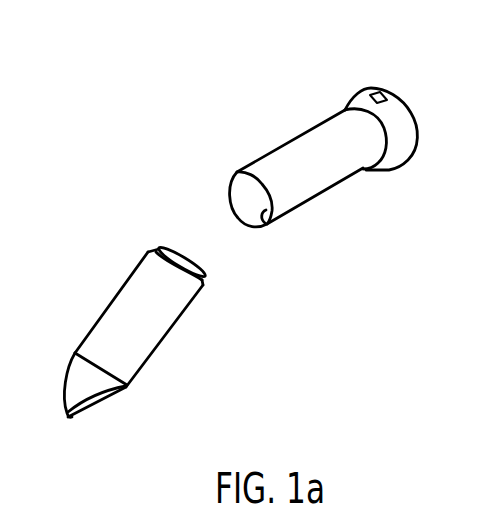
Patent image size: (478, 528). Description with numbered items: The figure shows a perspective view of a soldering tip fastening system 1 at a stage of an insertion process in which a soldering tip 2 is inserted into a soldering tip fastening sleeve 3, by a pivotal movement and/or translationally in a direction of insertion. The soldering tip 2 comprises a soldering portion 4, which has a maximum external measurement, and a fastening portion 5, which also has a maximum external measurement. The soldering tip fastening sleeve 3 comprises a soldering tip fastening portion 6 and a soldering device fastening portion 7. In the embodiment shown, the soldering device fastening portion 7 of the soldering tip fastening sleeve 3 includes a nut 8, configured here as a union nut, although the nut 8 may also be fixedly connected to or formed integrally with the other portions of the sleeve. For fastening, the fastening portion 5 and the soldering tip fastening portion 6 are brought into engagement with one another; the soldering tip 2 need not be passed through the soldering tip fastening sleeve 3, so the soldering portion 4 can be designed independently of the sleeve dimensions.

The soldering tip fastening system 1 is at (153, 152).
The soldering tip 2 is at (155, 332).
The soldering tip fastening sleeve 3 is at (293, 127).
The soldering portion 4 is at (103, 267).
The fastening portion 5 is at (144, 216).
The soldering tip fastening portion 6 is at (318, 231).
The soldering device fastening portion 7 is at (426, 175).
The nut 8 is at (373, 88).